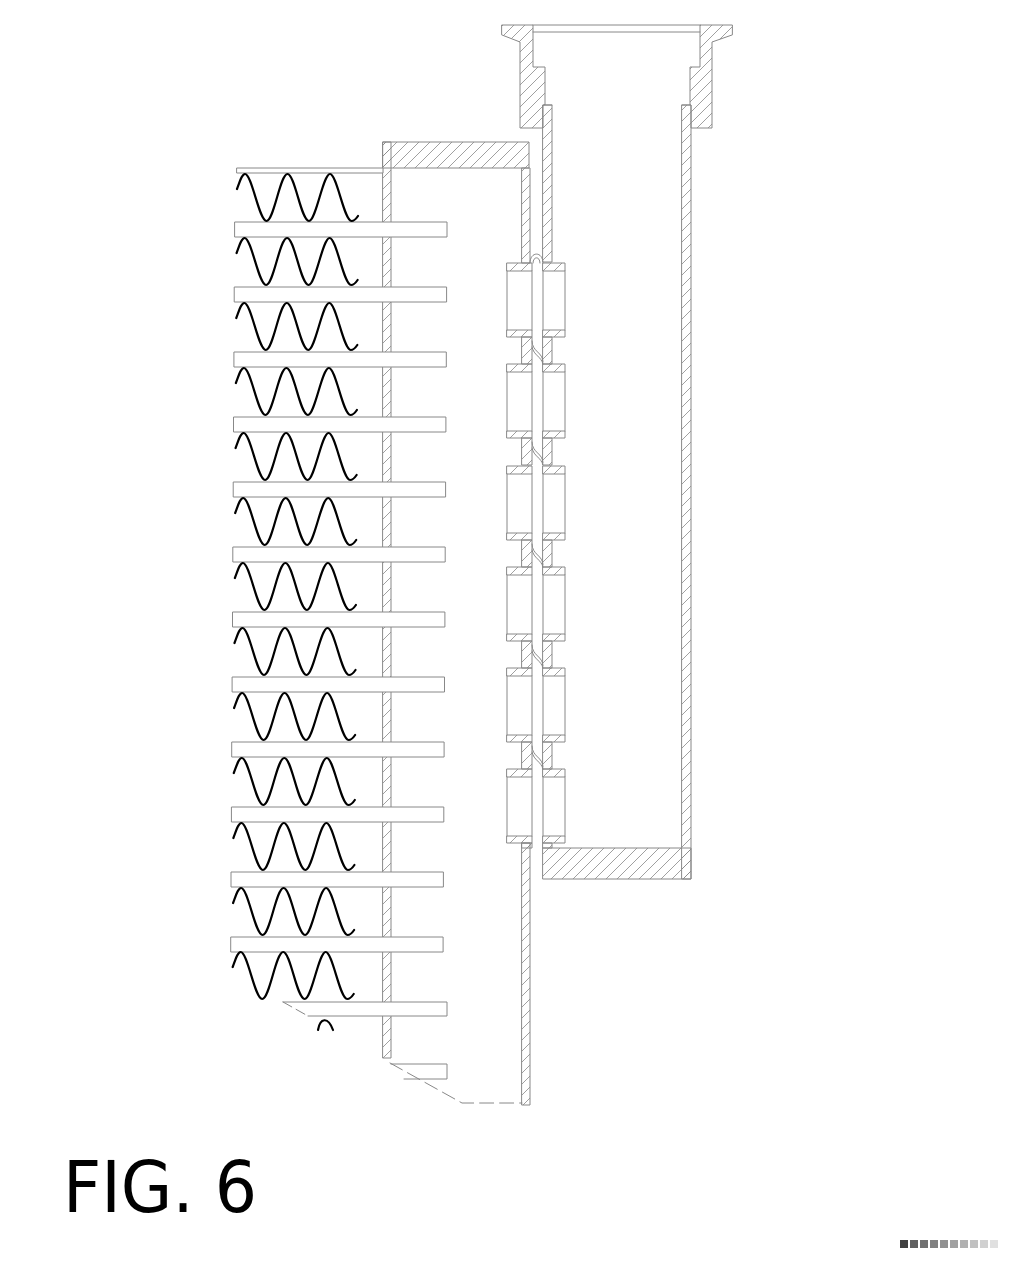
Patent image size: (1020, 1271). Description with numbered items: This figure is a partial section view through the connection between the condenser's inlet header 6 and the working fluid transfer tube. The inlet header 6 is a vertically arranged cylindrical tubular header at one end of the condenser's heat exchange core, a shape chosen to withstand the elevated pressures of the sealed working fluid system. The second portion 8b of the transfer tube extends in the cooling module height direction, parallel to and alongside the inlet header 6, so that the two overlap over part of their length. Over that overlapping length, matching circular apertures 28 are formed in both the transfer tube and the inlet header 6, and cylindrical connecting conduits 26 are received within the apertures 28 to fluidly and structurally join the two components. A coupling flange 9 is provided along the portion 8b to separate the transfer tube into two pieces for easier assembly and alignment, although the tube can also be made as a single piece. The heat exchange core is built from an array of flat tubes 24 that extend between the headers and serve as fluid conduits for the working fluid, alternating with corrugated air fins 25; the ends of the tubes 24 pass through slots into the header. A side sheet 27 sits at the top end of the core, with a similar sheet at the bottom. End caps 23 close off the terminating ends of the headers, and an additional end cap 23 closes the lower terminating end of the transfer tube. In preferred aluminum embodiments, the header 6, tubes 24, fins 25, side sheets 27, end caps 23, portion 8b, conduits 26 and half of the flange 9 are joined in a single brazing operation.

The inlet header 6 is at (528, 1005).
The second portion of the transfer tube 8b is at (693, 385).
The coupling flange 9 is at (743, 25).
The end cap 23 is at (440, 143).
The flat tube 24 is at (240, 429).
The corrugated air fin 25 is at (247, 267).
The connecting conduit 26 is at (561, 263).
The side sheet 27 is at (305, 171).
The circular aperture 28 is at (520, 267).